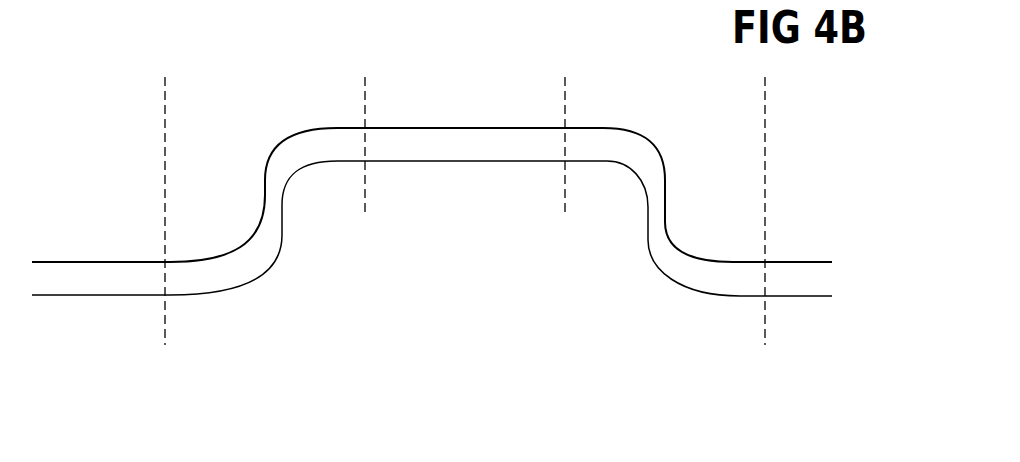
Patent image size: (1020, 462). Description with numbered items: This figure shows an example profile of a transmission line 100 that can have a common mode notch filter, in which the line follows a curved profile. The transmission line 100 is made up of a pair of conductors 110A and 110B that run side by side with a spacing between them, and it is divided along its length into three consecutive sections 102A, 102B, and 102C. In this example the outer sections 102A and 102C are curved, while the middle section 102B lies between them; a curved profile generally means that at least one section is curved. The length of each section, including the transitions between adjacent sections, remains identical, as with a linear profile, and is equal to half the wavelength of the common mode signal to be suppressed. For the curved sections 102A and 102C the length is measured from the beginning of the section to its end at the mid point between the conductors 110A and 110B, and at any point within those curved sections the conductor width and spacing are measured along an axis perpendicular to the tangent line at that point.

The transmission line 100 is at (460, 242).
The section 102A is at (165, 93).
The section 102B is at (365, 93).
The section 102C is at (565, 93).
The conductor 110A is at (70, 262).
The conductor 110B is at (67, 296).